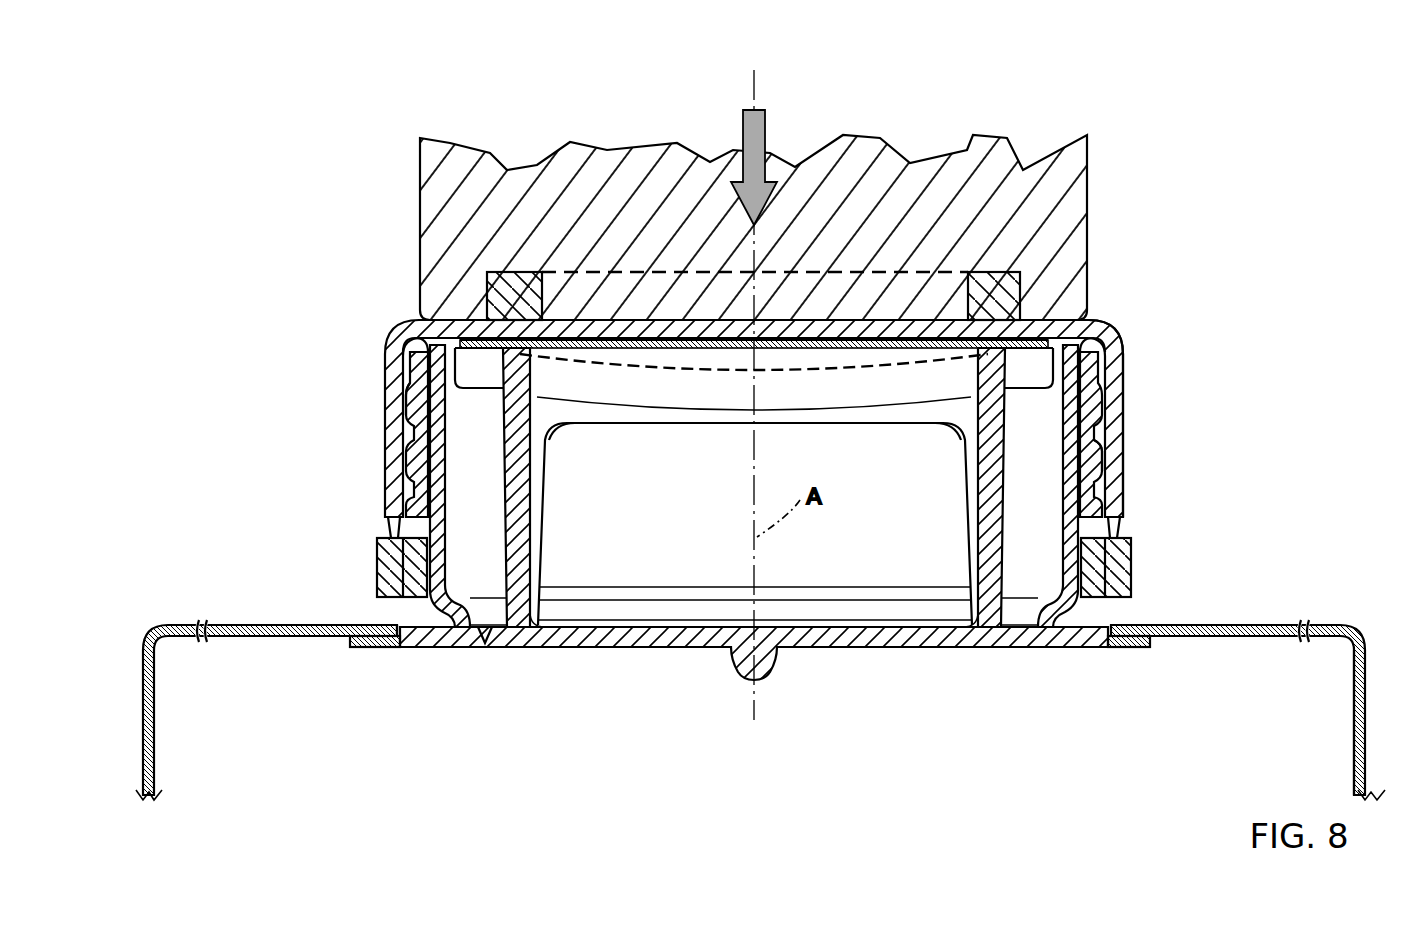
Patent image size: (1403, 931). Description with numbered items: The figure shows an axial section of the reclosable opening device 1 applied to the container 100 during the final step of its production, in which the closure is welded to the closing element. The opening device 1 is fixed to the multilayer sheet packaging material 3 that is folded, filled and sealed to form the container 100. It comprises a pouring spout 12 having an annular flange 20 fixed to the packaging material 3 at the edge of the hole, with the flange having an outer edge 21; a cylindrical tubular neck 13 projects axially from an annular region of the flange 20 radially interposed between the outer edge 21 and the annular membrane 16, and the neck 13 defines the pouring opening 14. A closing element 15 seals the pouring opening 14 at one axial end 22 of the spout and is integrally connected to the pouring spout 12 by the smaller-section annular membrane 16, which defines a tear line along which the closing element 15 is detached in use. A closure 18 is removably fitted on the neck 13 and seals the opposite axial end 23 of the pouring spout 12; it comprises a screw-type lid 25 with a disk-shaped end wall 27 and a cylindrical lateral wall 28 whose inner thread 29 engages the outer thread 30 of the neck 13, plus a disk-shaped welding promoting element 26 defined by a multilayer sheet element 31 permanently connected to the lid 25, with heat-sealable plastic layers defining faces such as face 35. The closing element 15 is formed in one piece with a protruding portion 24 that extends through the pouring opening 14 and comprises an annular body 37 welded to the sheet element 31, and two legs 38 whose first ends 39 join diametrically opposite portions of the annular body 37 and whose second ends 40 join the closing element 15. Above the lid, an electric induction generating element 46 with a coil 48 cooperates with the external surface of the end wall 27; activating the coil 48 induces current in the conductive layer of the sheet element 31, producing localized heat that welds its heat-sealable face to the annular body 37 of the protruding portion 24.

The reclosable opening device 1 is at (1257, 290).
The multilayer sheet packaging material 3 is at (230, 637).
The pouring spout 12 is at (1084, 371).
The cylindrical tubular neck 13 is at (410, 480).
The pouring opening 14 is at (454, 444).
The closing element 15 is at (667, 630).
The annular membrane 16 is at (486, 648).
The closure 18 is at (836, 320).
The annular flange 20 is at (420, 633).
The outer edge 21 is at (348, 640).
The axial end 22 is at (1050, 605).
The opposite axial end 23 is at (1100, 323).
The protruding portion 24 is at (618, 410).
The lid 25 is at (920, 322).
The welding promoting element 26 is at (645, 340).
The end wall 27 is at (913, 333).
The cylindrical lateral wall 28 is at (1117, 443).
The inner thread 29 is at (418, 425).
The outer thread 30 is at (1113, 460).
The multilayer sheet element 31 is at (677, 351).
The face 35 is at (567, 333).
The annular body 37 is at (962, 384).
The legs 38 is at (518, 530).
The first ends 39 is at (540, 418).
The second ends 40 is at (978, 610).
The electric induction generating element 46 is at (480, 197).
The coil 48 is at (500, 305).
The container 100 is at (1302, 590).